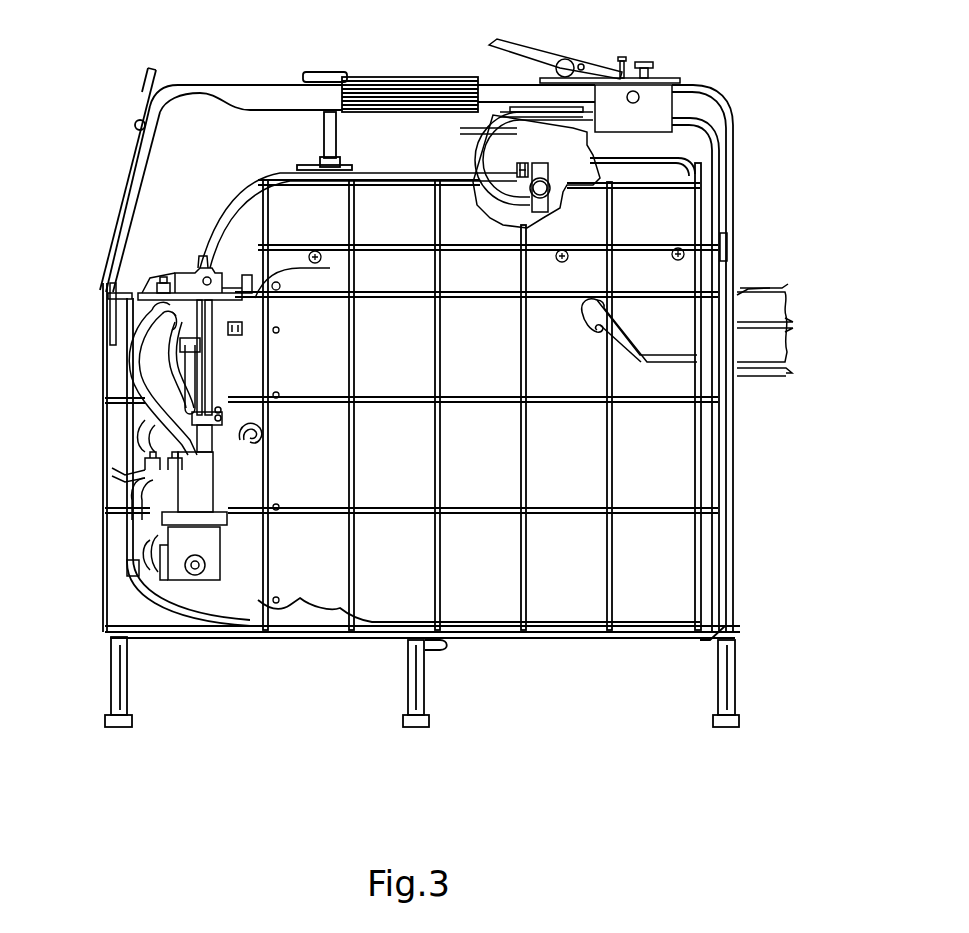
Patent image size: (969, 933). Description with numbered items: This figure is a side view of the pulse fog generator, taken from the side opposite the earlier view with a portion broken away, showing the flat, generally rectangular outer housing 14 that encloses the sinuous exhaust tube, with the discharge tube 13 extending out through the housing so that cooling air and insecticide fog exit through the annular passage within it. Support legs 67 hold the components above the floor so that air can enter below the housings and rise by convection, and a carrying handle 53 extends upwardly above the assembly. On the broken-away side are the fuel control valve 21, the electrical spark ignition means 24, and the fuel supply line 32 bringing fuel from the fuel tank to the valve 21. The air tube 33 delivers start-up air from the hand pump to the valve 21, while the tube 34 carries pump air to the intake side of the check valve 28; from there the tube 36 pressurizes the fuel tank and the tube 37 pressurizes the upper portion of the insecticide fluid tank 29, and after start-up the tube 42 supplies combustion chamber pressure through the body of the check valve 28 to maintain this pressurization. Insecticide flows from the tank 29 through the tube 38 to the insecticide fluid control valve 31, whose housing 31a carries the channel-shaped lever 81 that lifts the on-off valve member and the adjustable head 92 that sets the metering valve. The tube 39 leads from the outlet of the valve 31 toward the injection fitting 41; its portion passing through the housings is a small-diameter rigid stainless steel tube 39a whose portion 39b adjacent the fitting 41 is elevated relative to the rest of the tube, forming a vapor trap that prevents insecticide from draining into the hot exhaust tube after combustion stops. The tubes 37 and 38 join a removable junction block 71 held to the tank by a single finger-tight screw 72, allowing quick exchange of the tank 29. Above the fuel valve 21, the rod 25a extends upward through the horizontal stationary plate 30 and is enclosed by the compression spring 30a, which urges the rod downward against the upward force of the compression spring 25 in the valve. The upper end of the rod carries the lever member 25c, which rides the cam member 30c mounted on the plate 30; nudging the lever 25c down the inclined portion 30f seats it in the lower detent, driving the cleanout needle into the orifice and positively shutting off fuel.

The discharge tube 13 is at (774, 307).
The outer housing 14 is at (577, 602).
The fuel control valve 21 is at (197, 487).
The electrical spark ignition means 24 is at (204, 575).
The compression spring 25 is at (208, 447).
The rod 25a is at (207, 367).
The lever member 25c is at (214, 278).
The check valve 28 is at (213, 312).
The insecticide fluid tank 29 is at (570, 158).
The stationary plate 30 is at (240, 306).
The compression spring 30a is at (205, 351).
The cam member 30c is at (172, 278).
The downwardly inclined portion 30f is at (197, 268).
The insecticide fluid control valve 31 is at (676, 52).
The valve housing 31a is at (655, 98).
The fuel supply line 32 is at (165, 608).
The air tube 33 is at (252, 436).
The tube 34 is at (190, 367).
The tube 36 is at (137, 330).
The tube 37 is at (248, 190).
The tube 38 is at (482, 152).
The tube 39 is at (719, 132).
The rigid stainless steel tube 39a is at (727, 251).
The elevated portion 39b is at (580, 310).
The insecticide fluid injection fitting 41 is at (597, 348).
The tube 42 is at (248, 325).
The carrying handle 53 is at (283, 90).
The support legs 67 is at (117, 666).
The junction block 71 is at (545, 170).
The finger-tight screw 72 is at (545, 190).
The lever 81 is at (514, 52).
The head 92 is at (643, 62).